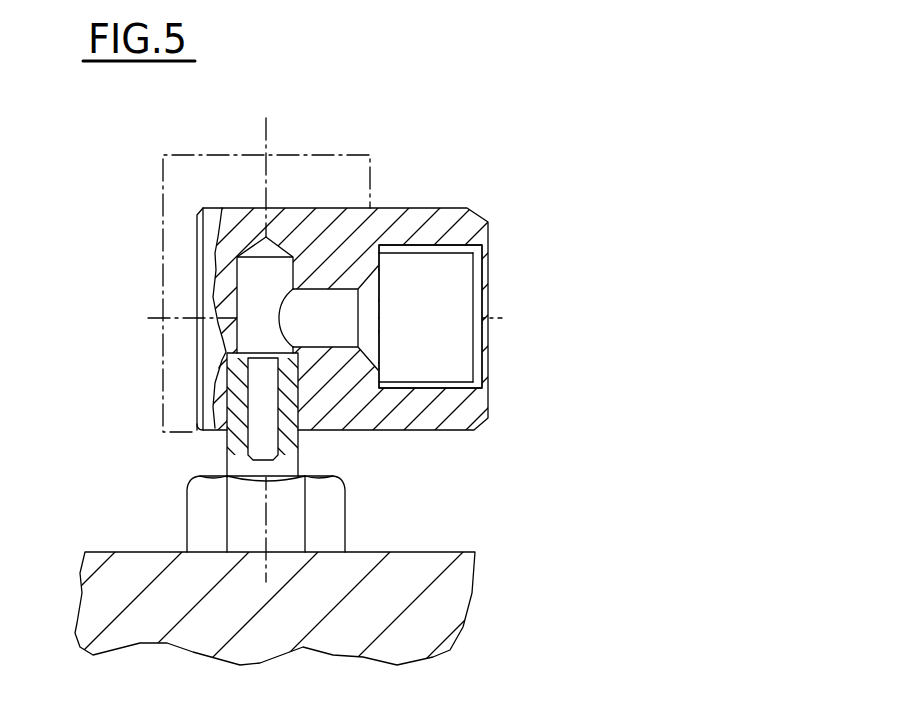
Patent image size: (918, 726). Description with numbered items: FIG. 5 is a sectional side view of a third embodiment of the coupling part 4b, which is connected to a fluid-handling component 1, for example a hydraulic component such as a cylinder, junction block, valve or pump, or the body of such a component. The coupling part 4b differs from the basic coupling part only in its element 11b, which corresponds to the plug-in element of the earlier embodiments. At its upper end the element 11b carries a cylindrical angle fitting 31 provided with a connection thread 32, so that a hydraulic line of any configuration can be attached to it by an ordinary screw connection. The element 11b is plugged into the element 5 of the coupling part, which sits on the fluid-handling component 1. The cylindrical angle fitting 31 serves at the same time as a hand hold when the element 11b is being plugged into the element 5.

The coupling part 4b is at (359, 255).
The angle fitting 31 is at (348, 235).
The connection thread 32 is at (448, 352).
The element 11b is at (227, 455).
The element 5 is at (202, 517).
The fluid-handling component 1 is at (422, 630).